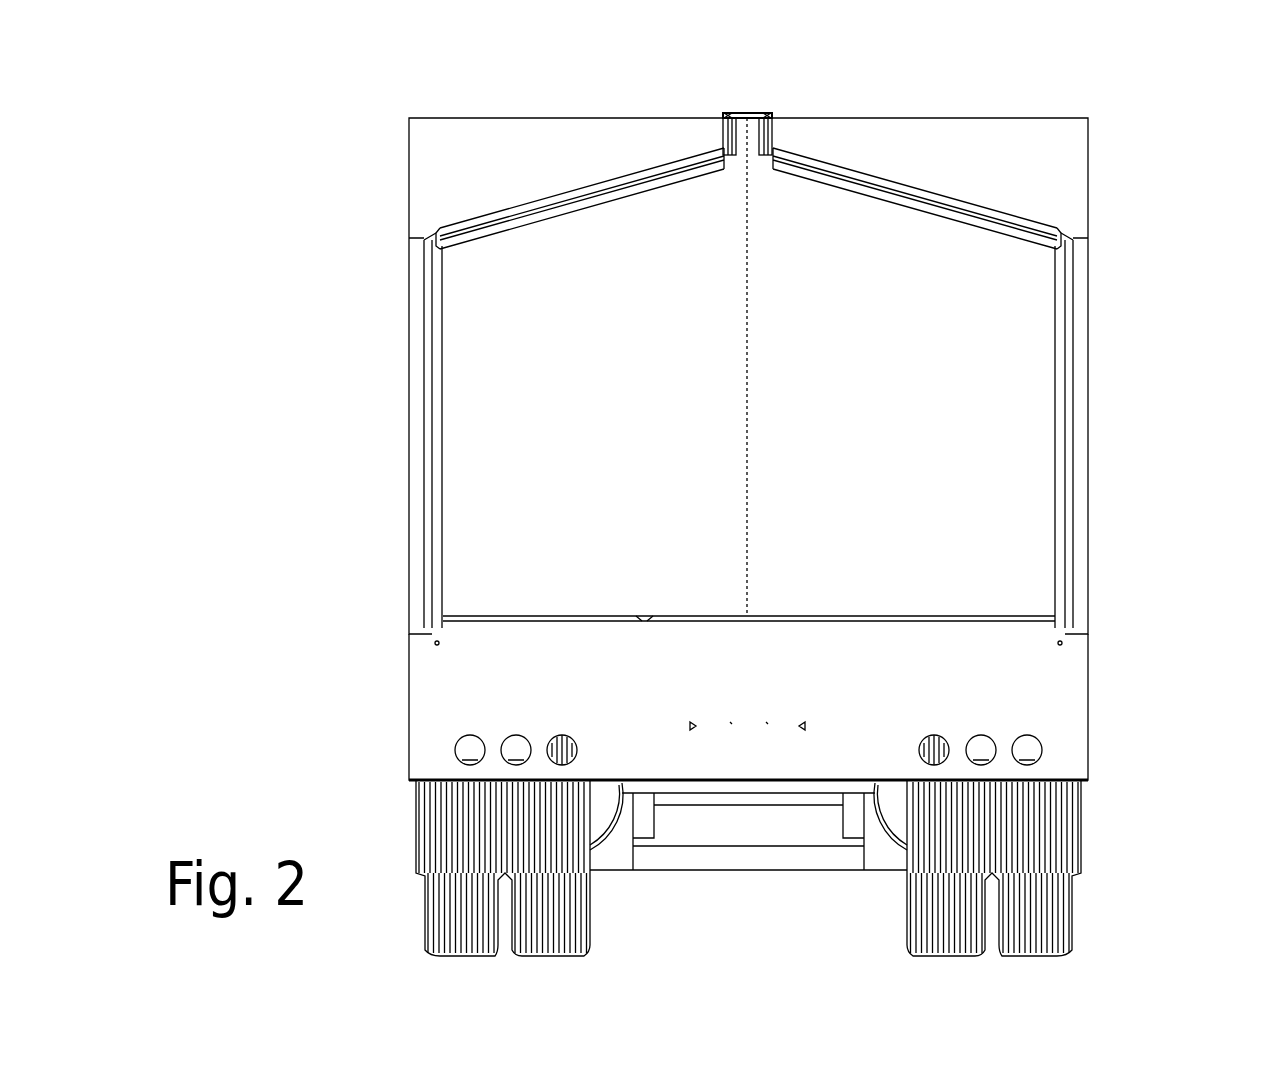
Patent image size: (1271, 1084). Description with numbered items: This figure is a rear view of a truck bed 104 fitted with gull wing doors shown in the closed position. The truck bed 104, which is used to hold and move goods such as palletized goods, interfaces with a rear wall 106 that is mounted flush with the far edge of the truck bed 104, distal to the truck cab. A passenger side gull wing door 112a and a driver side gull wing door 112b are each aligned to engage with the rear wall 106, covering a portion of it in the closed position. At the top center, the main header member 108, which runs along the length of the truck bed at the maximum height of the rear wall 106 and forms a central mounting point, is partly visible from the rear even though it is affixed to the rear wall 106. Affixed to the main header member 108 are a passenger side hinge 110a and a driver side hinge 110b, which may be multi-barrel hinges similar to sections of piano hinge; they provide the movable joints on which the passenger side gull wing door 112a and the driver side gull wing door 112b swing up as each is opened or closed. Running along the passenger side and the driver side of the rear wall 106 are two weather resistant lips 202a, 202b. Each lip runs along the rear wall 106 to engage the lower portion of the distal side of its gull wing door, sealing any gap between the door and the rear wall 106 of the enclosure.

The truck bed 104 is at (1058, 705).
The rear wall 106 is at (1032, 370).
The main header member 108 is at (747, 108).
The passenger side hinge 110a is at (763, 108).
The driver side hinge 110b is at (733, 113).
The passenger side gull wing door 112a is at (1050, 128).
The driver side gull wing door 112b is at (455, 142).
The weather resistant lip 202a is at (1028, 217).
The weather resistant lip 202b is at (445, 223).